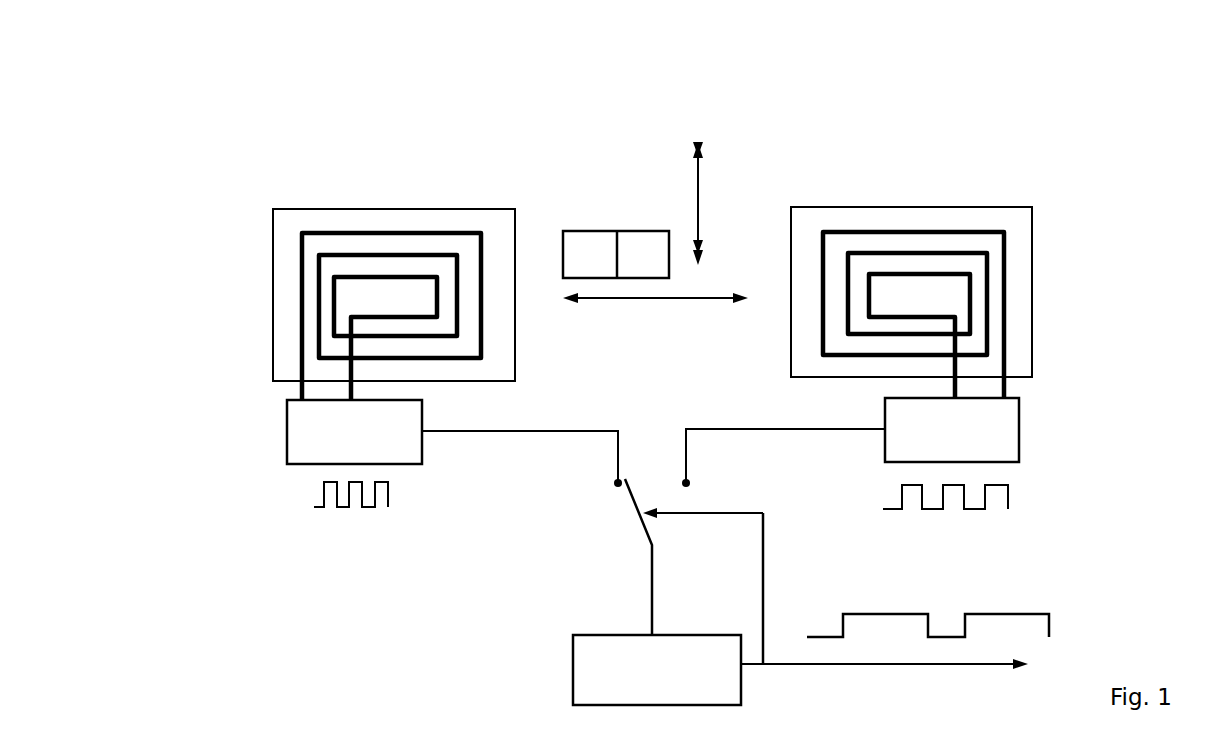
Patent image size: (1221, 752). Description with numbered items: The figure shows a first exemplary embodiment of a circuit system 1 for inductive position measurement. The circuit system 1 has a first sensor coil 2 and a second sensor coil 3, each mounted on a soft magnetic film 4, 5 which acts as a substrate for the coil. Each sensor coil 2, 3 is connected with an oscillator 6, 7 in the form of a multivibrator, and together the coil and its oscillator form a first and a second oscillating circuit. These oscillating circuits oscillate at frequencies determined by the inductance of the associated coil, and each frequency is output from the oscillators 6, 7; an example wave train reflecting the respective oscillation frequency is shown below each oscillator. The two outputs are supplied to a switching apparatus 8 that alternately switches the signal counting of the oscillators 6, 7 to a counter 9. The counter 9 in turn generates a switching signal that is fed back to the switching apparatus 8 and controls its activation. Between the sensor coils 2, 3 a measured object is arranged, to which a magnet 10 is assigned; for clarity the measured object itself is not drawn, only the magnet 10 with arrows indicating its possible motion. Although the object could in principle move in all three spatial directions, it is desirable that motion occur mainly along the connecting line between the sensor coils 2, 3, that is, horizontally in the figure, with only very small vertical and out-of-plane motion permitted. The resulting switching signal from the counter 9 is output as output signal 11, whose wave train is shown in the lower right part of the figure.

The circuit system 1 is at (1073, 118).
The first sensor coil 2 is at (410, 230).
The second sensor coil 3 is at (917, 227).
The soft magnetic film 4 is at (272, 252).
The soft magnetic film 5 is at (1032, 253).
The oscillator 6 is at (287, 437).
The oscillator 7 is at (1023, 430).
The switching apparatus 8 is at (622, 509).
The counter 9 is at (572, 675).
The magnet 10 is at (605, 230).
The output signal 11 is at (895, 659).